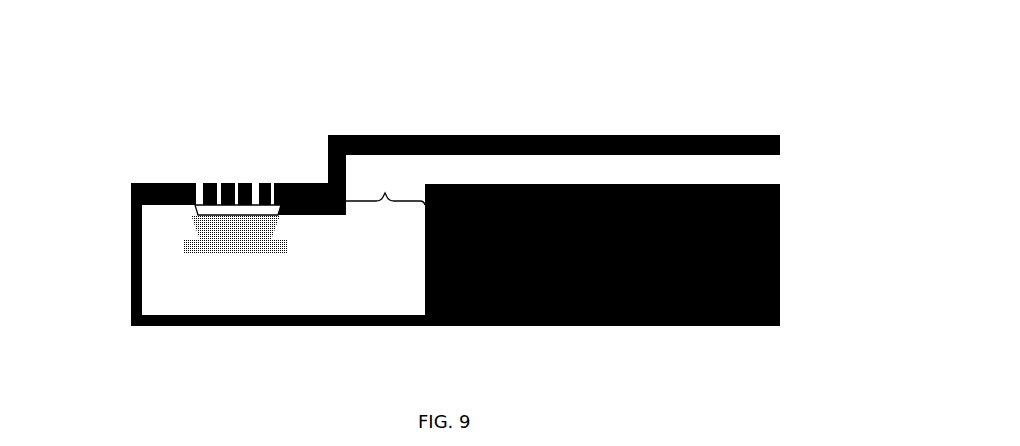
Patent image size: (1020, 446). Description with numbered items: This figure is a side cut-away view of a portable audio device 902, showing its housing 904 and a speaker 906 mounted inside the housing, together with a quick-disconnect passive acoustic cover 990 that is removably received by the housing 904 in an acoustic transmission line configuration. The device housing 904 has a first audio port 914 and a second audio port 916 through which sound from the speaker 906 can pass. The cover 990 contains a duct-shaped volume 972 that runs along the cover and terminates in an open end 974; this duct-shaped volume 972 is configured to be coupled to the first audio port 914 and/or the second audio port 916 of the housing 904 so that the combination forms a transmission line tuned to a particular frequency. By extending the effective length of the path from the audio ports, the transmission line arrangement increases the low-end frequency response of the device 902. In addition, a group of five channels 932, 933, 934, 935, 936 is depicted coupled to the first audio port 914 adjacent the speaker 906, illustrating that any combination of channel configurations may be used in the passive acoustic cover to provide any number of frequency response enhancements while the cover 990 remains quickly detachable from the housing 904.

The portable audio device 902 is at (475, 167).
The housing 904 is at (428, 318).
The speaker 906 is at (182, 238).
The first audio port 914 is at (225, 199).
The second audio port 916 is at (377, 185).
The channel 932 is at (192, 175).
The channel 933 is at (205, 175).
The channel 934 is at (227, 175).
The channel 935 is at (244, 175).
The channel 936 is at (260, 175).
The duct-shaped volume 972 is at (463, 158).
The open end 974 is at (766, 161).
The quick-disconnect passive acoustic cover 990 is at (575, 127).